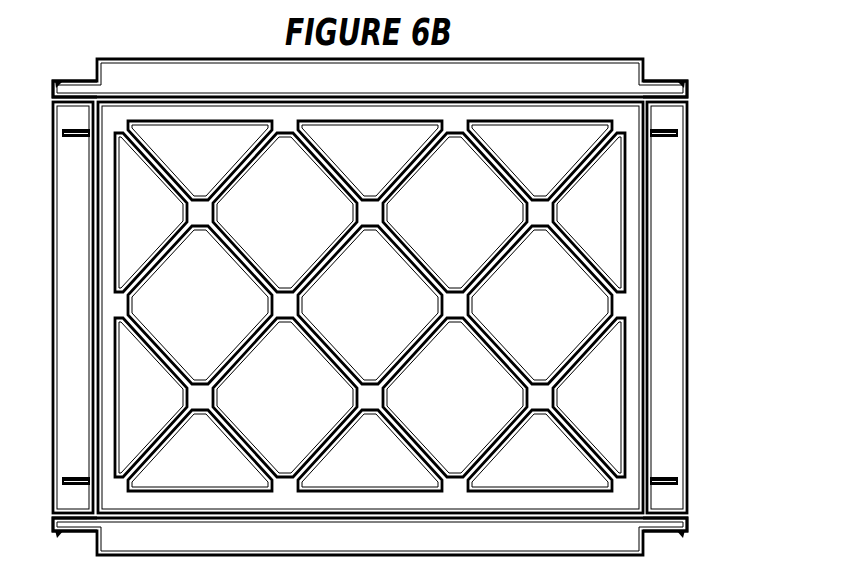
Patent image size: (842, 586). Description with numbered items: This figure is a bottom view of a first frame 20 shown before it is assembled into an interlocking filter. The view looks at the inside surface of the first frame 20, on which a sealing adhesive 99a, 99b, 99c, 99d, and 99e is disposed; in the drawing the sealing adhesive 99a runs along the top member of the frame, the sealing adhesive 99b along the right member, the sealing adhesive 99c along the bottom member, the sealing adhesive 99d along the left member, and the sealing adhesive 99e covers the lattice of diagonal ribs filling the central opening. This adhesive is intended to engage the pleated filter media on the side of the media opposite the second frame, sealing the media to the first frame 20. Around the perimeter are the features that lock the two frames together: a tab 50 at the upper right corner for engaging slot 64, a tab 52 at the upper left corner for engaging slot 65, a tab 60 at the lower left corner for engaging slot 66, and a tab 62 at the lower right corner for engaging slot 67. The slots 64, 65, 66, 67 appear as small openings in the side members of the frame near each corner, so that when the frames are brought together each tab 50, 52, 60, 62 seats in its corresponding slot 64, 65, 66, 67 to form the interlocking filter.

The first frame 20 is at (736, 86).
The tab 50 is at (687, 88).
The tab 52 is at (53, 88).
The tab 60 is at (53, 527).
The tab 62 is at (687, 527).
The slot 64 is at (663, 129).
The slot 65 is at (78, 129).
The slot 66 is at (78, 485).
The slot 67 is at (662, 485).
The sealing adhesive 99a is at (97, 71).
The sealing adhesive 99b is at (687, 311).
The sealing adhesive 99c is at (643, 541).
The sealing adhesive 99d is at (53, 302).
The sealing adhesive 99e is at (300, 307).